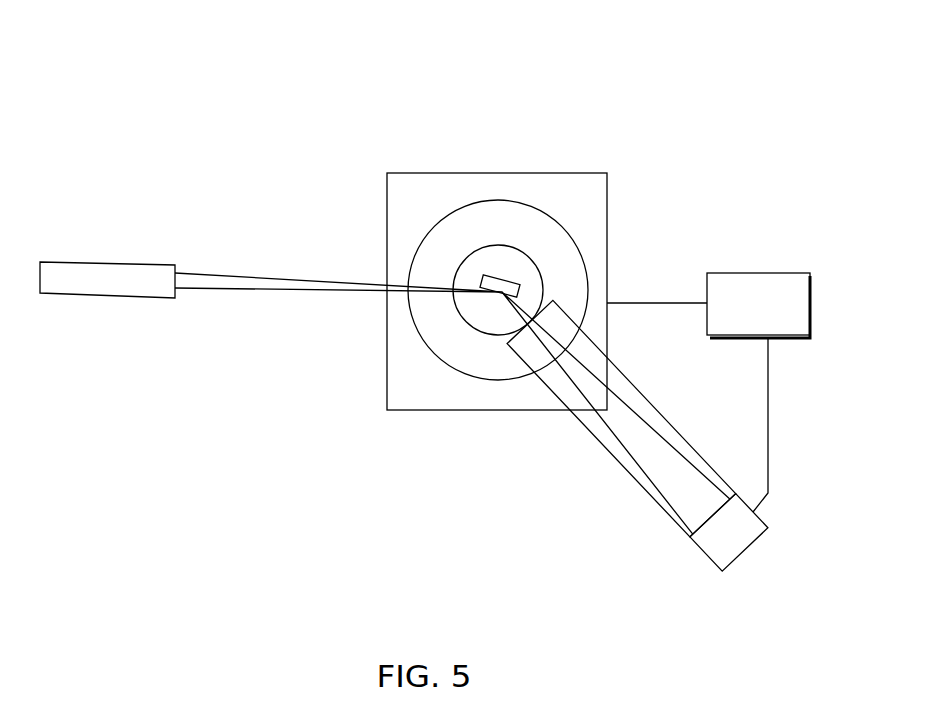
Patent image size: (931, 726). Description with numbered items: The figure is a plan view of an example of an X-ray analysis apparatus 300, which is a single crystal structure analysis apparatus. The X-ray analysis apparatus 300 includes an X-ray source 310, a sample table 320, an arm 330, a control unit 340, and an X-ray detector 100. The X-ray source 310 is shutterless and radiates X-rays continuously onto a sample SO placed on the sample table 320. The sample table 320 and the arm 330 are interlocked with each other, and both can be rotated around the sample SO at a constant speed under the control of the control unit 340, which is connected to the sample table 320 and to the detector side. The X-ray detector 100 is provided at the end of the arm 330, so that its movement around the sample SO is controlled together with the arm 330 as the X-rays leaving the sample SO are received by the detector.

The X-ray analysis apparatus 300 is at (416, 79).
The X-ray source 310 is at (106, 262).
The sample table 320 is at (493, 173).
The sample SO is at (491, 275).
The arm 330 is at (610, 455).
The X-ray detector 100 is at (721, 573).
The control unit 340 is at (757, 273).